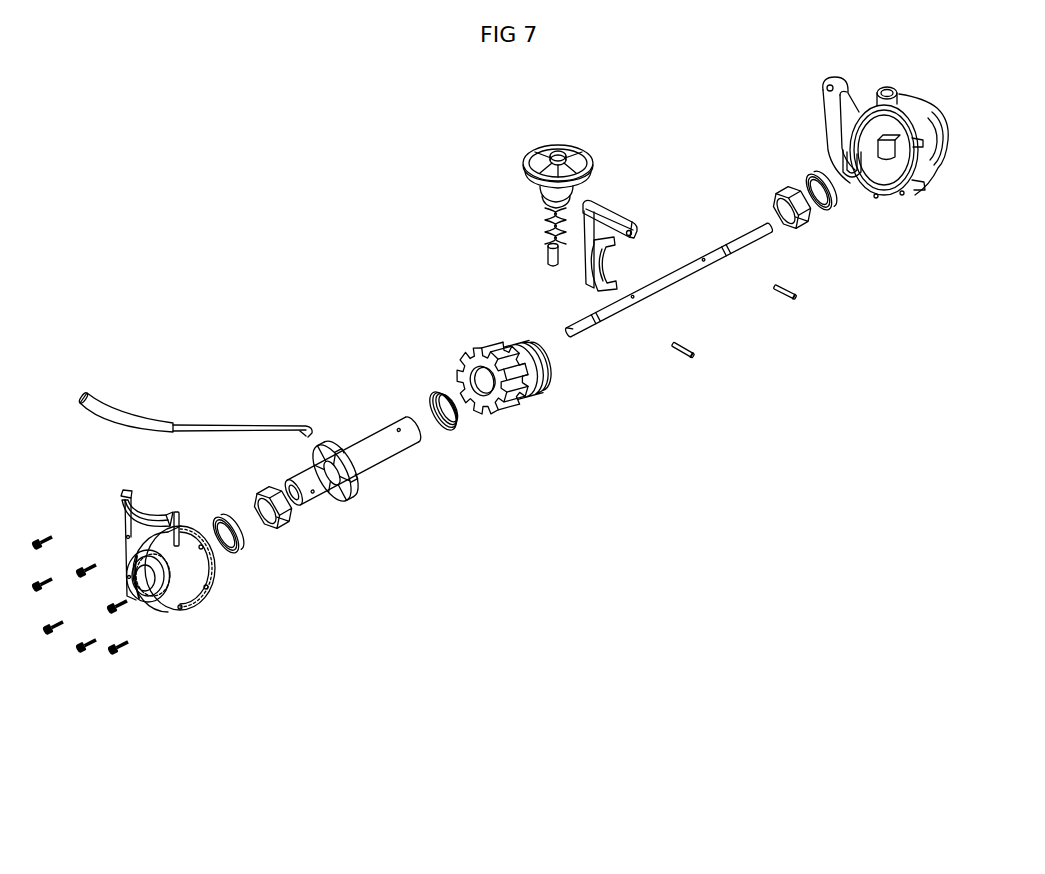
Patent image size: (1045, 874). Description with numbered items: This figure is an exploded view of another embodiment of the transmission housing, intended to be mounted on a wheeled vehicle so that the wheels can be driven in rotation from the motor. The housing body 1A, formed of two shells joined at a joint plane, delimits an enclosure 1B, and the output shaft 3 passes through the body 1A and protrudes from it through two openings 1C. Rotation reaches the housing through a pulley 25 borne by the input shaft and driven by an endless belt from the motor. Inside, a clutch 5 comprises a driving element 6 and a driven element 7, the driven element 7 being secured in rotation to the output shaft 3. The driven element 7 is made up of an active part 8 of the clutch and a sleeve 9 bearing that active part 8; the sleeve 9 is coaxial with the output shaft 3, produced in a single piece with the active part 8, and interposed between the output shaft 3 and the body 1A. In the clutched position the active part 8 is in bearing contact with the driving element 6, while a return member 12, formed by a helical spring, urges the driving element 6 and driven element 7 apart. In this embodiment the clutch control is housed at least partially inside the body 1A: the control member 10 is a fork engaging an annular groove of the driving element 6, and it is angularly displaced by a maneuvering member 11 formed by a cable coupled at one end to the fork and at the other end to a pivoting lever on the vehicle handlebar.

The housing body 1A is at (213, 600).
The enclosure 1B is at (892, 177).
The openings 1C is at (145, 602).
The output shaft 3 is at (680, 283).
The clutch 5 is at (470, 338).
The driving element 6 is at (510, 410).
The driven element 7 is at (413, 328).
The active part 8 is at (323, 447).
The sleeve 9 is at (375, 433).
The control member 10 is at (612, 208).
The maneuvering member 11 is at (152, 420).
The return member 12 is at (453, 427).
The pulley 25 is at (582, 140).